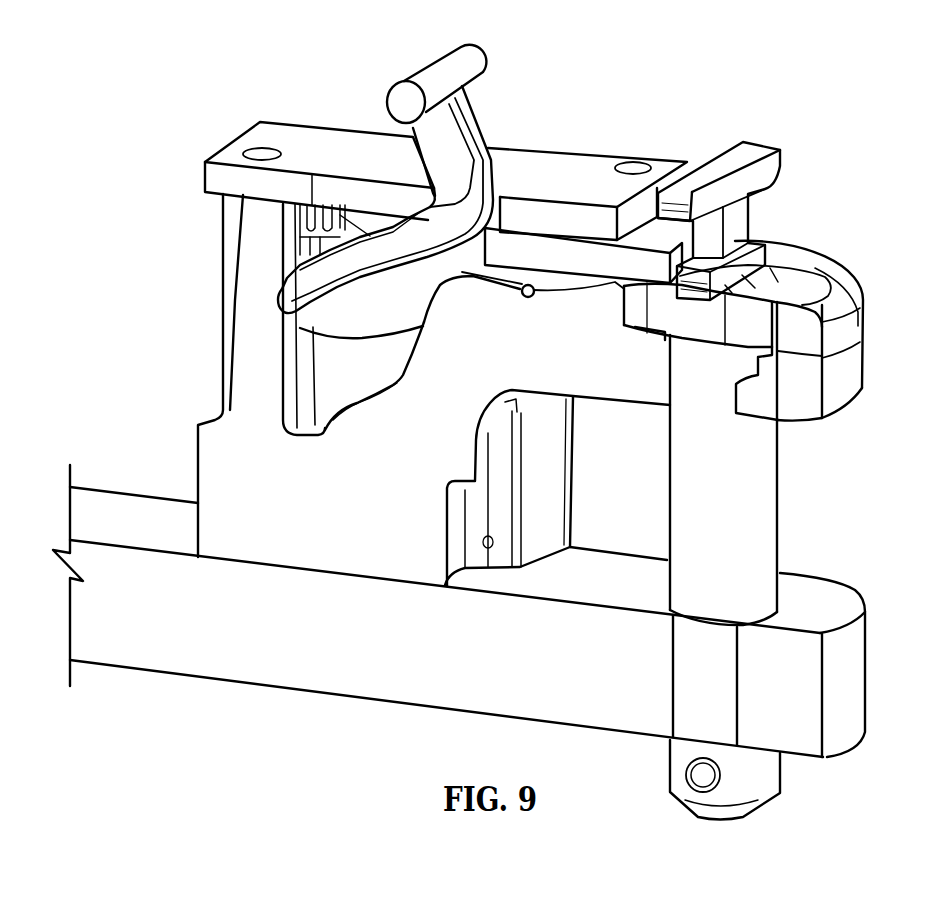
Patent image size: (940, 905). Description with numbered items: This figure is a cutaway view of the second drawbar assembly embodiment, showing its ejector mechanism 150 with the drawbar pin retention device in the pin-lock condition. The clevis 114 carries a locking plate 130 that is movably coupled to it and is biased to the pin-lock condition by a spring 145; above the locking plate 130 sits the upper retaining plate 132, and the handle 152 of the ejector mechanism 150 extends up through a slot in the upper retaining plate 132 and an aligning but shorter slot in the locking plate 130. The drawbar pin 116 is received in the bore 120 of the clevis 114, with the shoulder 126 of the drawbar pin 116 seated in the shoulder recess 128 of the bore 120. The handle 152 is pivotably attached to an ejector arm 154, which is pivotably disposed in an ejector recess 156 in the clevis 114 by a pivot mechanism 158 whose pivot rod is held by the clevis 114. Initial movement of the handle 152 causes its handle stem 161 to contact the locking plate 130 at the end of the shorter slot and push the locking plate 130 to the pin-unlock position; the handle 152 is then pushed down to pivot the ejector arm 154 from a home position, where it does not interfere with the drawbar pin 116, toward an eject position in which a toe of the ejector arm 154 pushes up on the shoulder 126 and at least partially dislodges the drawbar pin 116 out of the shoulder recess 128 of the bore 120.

The ejector mechanism 150 is at (170, 187).
The handle stem 161 is at (413, 216).
The handle 152 is at (468, 64).
The upper retaining plate 132 is at (582, 162).
The locking plate 130 is at (594, 267).
The bore 120 is at (780, 270).
The shoulder recess 128 is at (824, 336).
The shoulder 126 is at (720, 337).
The clevis 114 is at (788, 405).
The drawbar pin 116 is at (752, 518).
The pivot mechanism 158 is at (528, 300).
The ejector arm 154 is at (408, 312).
The ejector recess 156 is at (370, 378).
The spring 145 is at (280, 208).